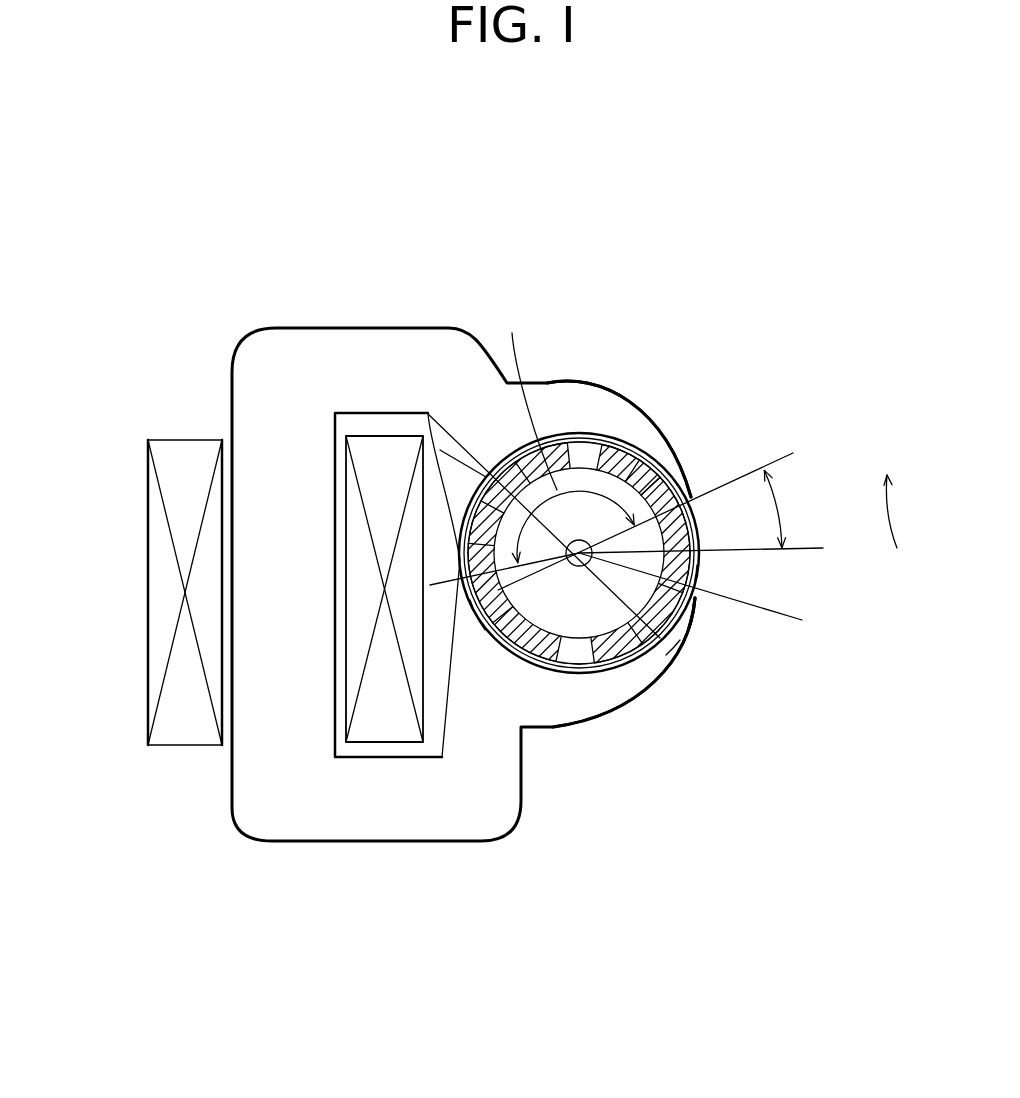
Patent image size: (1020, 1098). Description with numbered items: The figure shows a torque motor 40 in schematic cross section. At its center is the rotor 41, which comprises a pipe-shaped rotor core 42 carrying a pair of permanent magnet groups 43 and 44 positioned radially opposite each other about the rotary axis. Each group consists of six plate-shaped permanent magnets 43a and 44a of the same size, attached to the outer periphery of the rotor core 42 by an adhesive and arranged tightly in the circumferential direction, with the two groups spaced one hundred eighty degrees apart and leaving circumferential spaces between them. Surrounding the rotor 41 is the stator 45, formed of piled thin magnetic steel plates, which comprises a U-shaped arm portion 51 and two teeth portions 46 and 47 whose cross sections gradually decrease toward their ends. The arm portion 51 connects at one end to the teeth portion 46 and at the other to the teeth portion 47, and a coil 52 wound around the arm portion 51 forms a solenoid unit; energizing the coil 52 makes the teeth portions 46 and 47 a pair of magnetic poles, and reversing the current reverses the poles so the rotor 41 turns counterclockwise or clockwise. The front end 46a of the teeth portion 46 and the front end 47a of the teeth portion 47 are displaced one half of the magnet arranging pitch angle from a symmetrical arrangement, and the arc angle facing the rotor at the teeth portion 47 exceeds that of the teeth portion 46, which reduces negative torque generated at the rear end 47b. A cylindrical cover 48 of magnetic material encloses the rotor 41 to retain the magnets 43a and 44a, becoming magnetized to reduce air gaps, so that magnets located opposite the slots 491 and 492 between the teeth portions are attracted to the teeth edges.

The torque motor 40 is at (593, 257).
The rotor 41 is at (717, 518).
The rotor core 42 is at (673, 653).
The permanent magnet group 43 is at (652, 453).
The permanent magnet 43a is at (697, 471).
The permanent magnet group 44 is at (497, 650).
The permanent magnet 44a is at (547, 673).
The stator 45 is at (291, 320).
The teeth portion 46 is at (585, 417).
The front end 46a is at (708, 483).
The teeth portion 47 is at (613, 690).
The front end 47a is at (462, 613).
The rear end 47b is at (692, 608).
The cylindrical cover 48 is at (697, 572).
The slot 491 is at (707, 563).
The slot 492 is at (427, 411).
The arm portion 51 is at (287, 683).
The coil 52 is at (155, 610).